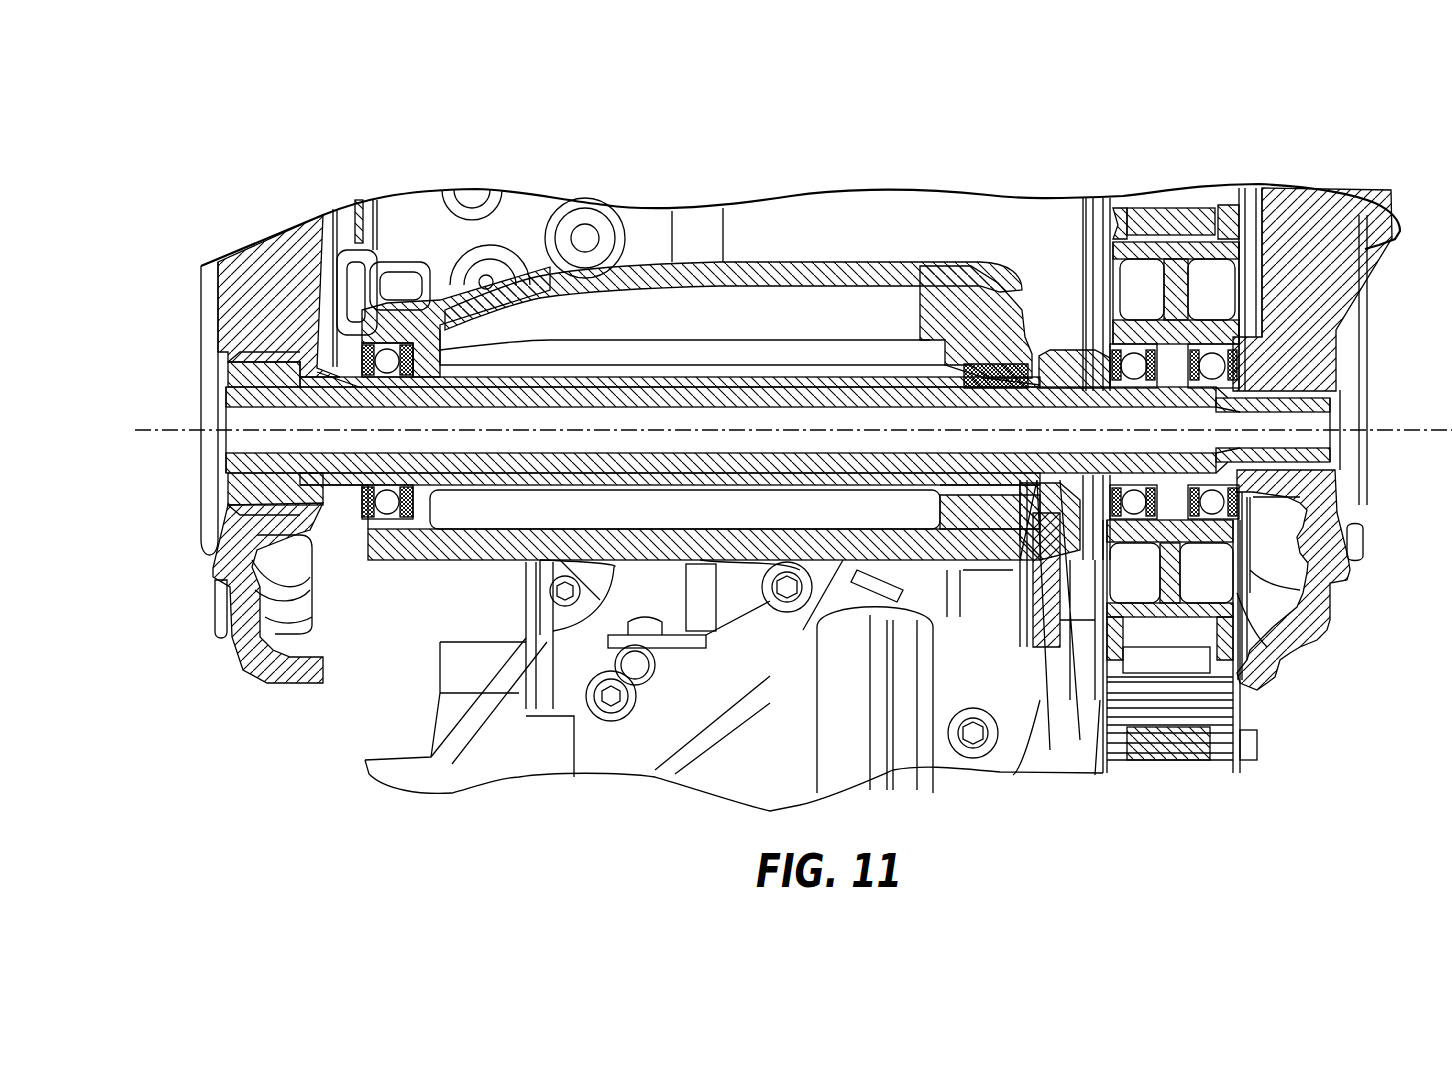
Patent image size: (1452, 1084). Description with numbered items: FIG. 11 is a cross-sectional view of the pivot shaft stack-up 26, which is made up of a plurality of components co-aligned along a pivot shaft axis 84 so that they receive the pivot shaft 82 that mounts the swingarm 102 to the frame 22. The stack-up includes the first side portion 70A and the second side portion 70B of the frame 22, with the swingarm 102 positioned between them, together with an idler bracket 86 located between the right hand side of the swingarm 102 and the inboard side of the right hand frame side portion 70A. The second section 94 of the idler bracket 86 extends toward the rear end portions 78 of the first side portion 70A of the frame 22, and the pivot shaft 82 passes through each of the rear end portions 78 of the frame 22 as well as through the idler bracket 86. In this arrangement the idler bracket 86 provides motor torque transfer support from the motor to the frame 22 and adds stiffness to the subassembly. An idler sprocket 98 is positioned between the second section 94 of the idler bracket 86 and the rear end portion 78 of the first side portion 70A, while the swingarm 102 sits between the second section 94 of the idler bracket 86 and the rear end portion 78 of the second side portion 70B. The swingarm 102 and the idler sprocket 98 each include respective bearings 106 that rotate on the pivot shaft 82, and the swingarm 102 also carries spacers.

The pivot shaft stack-up 26 is at (285, 170).
The frame 22 is at (268, 272).
The first side portion 70A is at (1302, 282).
The second side portion 70B is at (214, 345).
The rear end portions 78 is at (240, 520).
The pivot shaft 82 is at (532, 387).
The pivot shaft axis 84 is at (195, 430).
The idler bracket 86 is at (1062, 355).
The second section 94 is at (1040, 680).
The idler sprocket 98 is at (1170, 215).
The swingarm 102 is at (745, 268).
The bearings 106 is at (386, 350).